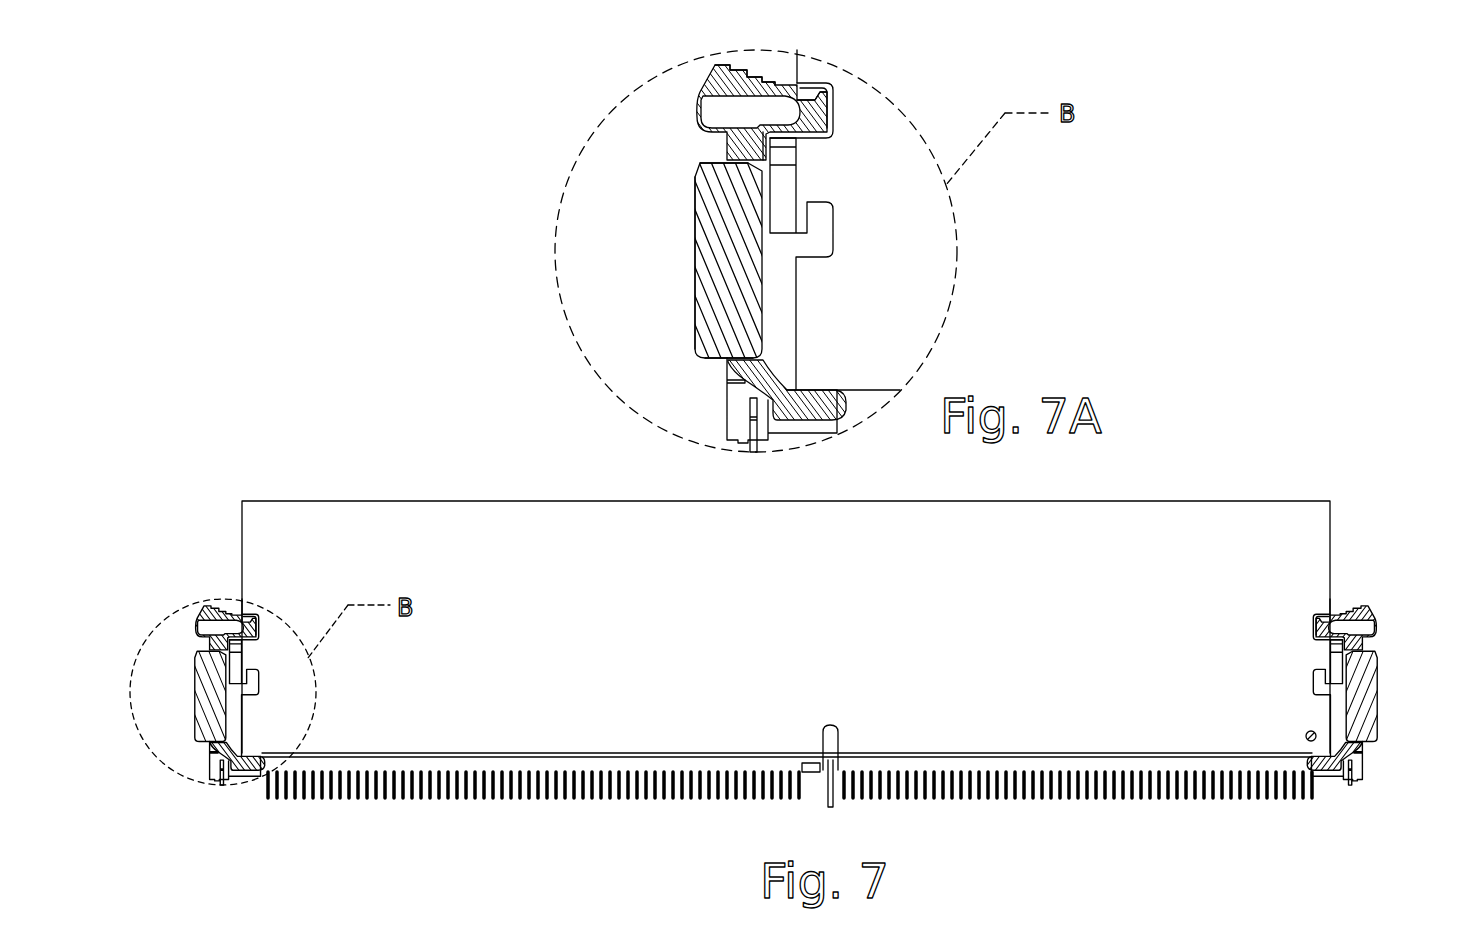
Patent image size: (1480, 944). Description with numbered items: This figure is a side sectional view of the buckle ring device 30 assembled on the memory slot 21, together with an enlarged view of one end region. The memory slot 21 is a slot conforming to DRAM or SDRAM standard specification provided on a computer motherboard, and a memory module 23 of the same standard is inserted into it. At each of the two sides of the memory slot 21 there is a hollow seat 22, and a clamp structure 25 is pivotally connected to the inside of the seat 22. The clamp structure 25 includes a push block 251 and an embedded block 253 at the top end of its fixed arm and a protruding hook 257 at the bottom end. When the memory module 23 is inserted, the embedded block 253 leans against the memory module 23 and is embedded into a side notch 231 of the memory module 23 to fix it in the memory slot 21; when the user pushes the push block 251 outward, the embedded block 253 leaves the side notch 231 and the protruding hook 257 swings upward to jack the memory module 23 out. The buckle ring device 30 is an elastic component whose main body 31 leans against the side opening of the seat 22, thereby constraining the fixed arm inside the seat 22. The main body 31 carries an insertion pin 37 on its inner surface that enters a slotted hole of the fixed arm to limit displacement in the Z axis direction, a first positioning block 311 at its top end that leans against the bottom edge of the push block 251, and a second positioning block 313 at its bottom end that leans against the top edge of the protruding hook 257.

In FIG. 7, the memory slot 21 is at (977, 762).
In FIG. 7A, the seat 22 is at (733, 430).
In FIG. 7, the seat 22 is at (243, 777).
In FIG. 7A, the memory module 23 is at (905, 241).
In FIG. 7, the memory module 23 is at (1250, 540).
In FIG. 7A, the side notch 231 is at (833, 113).
In FIG. 7A, the clamp structure 25 is at (687, 113).
In FIG. 7, the clamp structure 25 is at (188, 629).
In FIG. 7A, the push block 251 is at (743, 66).
In FIG. 7A, the embedded block 253 is at (813, 103).
In FIG. 7A, the protruding hook 257 is at (791, 416).
In FIG. 7A, the buckle ring device 30 is at (687, 261).
In FIG. 7, the buckle ring device 30 is at (186, 693).
In FIG. 7A, the main body 31 is at (695, 292).
In FIG. 7A, the first positioning block 311 is at (700, 167).
In FIG. 7A, the second positioning block 313 is at (700, 355).
In FIG. 7A, the insertion pin 37 is at (735, 313).